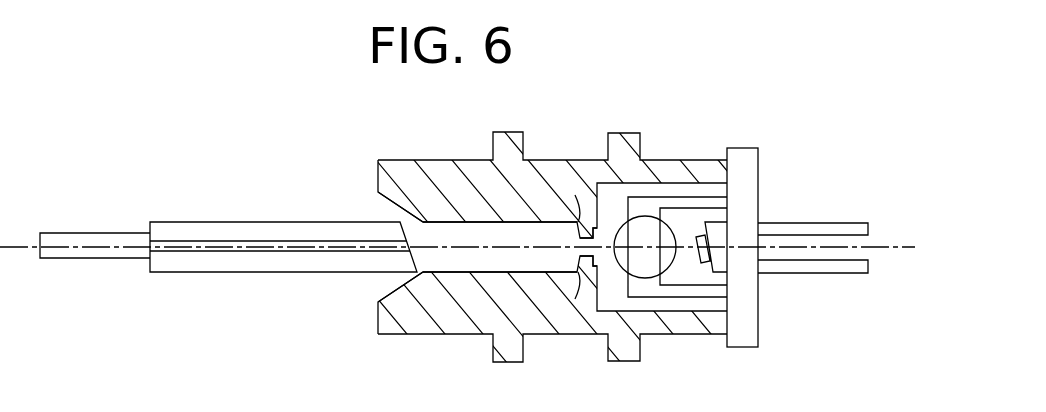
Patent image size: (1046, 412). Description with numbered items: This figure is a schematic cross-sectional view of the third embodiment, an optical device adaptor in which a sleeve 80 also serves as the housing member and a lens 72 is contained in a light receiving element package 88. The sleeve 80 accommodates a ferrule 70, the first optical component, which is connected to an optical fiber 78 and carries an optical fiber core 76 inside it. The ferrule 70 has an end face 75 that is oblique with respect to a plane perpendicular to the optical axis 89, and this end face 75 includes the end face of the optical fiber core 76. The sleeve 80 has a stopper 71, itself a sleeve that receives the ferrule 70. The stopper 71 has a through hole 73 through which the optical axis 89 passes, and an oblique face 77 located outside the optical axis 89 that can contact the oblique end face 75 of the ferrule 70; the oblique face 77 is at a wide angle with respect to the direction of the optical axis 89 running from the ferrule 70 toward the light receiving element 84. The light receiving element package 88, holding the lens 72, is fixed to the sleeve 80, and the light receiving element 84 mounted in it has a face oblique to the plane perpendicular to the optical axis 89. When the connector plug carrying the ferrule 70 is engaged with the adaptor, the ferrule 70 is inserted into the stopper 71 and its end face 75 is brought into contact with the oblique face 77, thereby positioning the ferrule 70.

The ferrule 70 is at (240, 230).
The stopper 71 is at (582, 305).
The lens 72 is at (638, 230).
The through hole 73 is at (572, 222).
The end face 75 is at (404, 220).
The optical fiber core 76 is at (163, 247).
The oblique face 77 is at (593, 226).
The optical fiber 78 is at (80, 240).
The sleeve 80 is at (452, 165).
The light receiving element 84 is at (699, 233).
The light receiving element package 88 is at (745, 150).
The optical axis 89 is at (893, 246).